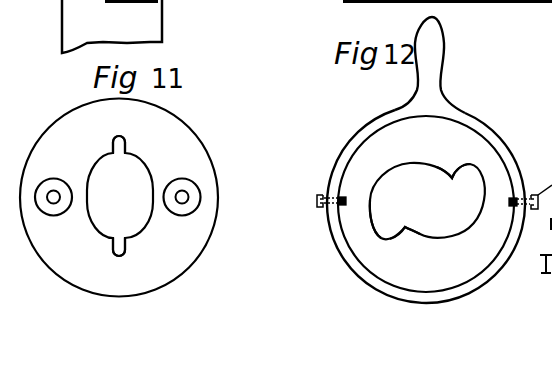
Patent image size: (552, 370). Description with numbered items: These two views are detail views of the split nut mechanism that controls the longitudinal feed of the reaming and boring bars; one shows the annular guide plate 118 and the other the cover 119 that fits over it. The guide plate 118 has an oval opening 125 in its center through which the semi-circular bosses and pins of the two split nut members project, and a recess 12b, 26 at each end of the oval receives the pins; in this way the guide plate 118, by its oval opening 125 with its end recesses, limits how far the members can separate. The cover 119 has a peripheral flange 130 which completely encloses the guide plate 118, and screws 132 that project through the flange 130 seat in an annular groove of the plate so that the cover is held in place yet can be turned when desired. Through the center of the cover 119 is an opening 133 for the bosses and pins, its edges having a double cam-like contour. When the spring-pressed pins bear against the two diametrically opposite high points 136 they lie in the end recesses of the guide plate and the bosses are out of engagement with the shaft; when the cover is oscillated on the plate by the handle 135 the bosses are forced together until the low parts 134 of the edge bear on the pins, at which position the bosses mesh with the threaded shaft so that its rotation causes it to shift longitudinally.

In FIG. 11, the annular guide plate 118 is at (168, 132).
In FIG. 11, the oval opening 125 is at (120, 196).
In FIG. 11, the upper slot extension 12b is at (125, 139).
In FIG. 11, the lower slot extension 26 is at (125, 250).
In FIG. 12, the cover 119 is at (383, 143).
In FIG. 12, the handle 135 is at (551, 40).
In FIG. 12, the peripheral flange 130 is at (337, 170).
In FIG. 12, the opening 133 is at (427, 201).
In FIG. 12, the low parts 134 is at (407, 164).
In FIG. 12, the high points 136 is at (381, 238).
In FIG. 12, the screws 132 is at (317, 205).